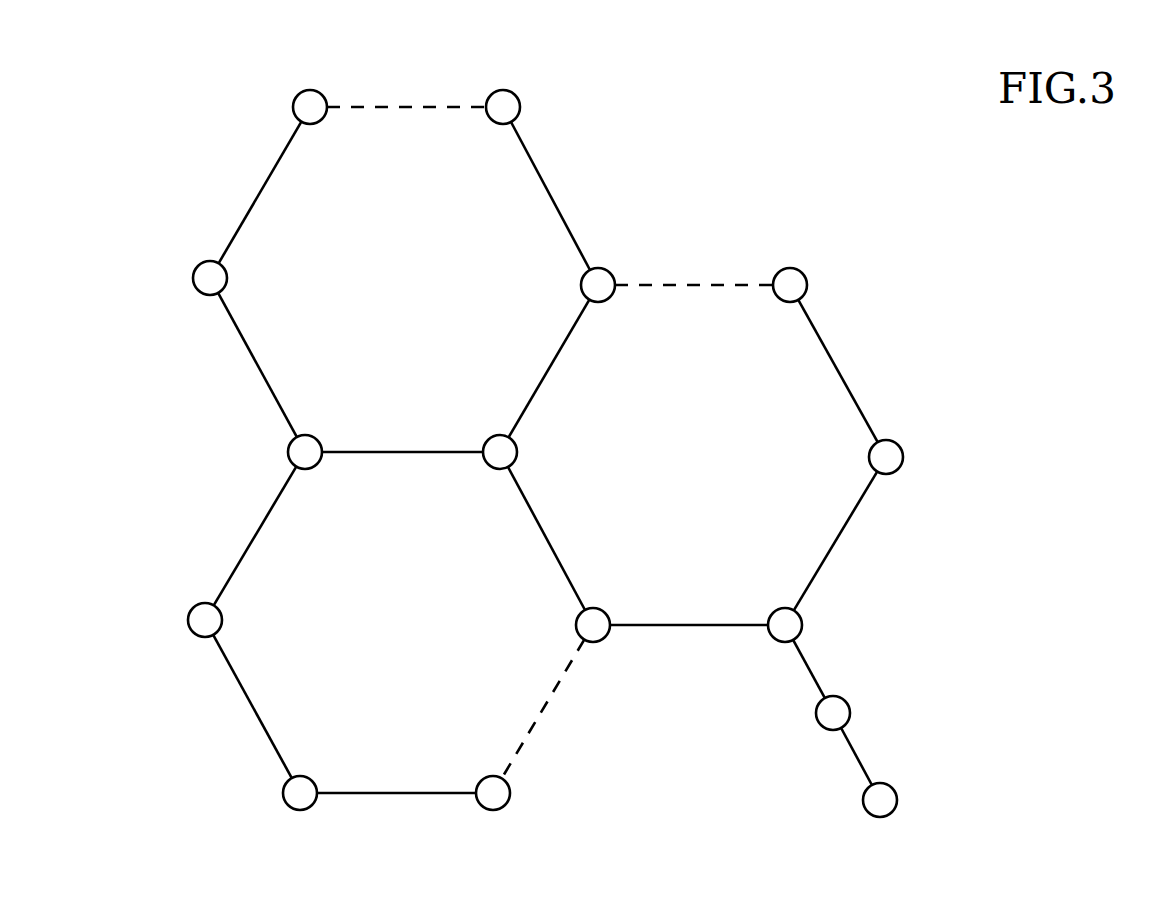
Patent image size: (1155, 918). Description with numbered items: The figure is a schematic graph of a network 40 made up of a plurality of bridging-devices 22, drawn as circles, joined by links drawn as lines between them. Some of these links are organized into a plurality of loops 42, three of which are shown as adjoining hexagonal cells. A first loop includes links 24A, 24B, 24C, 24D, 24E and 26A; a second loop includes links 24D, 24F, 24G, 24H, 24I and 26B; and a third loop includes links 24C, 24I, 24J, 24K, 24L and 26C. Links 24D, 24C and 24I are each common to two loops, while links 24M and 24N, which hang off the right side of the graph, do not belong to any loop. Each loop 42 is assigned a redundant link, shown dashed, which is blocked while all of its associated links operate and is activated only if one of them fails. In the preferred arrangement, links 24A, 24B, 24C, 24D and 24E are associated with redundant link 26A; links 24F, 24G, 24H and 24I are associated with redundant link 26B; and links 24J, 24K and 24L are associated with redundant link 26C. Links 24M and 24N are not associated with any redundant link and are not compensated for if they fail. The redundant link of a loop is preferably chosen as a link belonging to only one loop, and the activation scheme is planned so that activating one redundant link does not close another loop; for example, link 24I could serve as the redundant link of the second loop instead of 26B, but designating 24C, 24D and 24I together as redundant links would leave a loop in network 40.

The network 40 is at (815, 95).
The bridging-device 22 is at (513, 93).
The loop 42 is at (539, 449).
The link 24A is at (275, 170).
The link 24B is at (242, 340).
The link 24C is at (368, 452).
The link 24D is at (535, 397).
The link 24E is at (560, 182).
The link 24F is at (838, 362).
The link 24G is at (840, 535).
The link 24H is at (658, 625).
The link 24I is at (560, 552).
The link 24J is at (238, 560).
The link 24K is at (242, 688).
The link 24L is at (367, 795).
The link 24M is at (806, 652).
The link 24N is at (857, 752).
The redundant link 26A is at (413, 107).
The redundant link 26B is at (700, 285).
The redundant link 26C is at (545, 742).